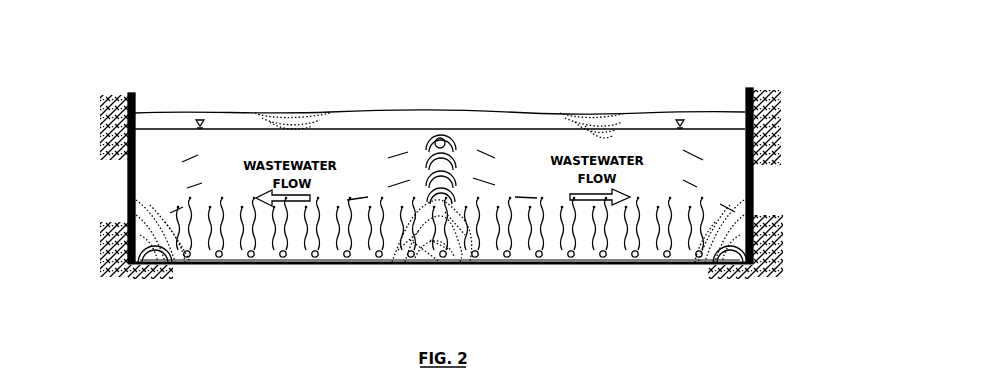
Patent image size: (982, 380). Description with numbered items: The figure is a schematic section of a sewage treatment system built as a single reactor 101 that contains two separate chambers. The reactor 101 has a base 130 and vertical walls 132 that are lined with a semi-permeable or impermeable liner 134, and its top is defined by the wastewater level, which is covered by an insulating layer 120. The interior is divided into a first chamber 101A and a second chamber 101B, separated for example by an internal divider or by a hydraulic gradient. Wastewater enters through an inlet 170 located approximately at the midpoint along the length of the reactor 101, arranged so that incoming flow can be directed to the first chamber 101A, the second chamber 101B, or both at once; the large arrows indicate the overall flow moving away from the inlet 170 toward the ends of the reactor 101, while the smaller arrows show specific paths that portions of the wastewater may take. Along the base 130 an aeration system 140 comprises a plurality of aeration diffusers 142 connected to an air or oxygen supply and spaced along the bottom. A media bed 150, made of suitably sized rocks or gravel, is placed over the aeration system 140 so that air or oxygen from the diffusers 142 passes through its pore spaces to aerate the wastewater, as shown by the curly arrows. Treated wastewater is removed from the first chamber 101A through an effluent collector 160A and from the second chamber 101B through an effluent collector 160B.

The reactor 101 is at (440, 102).
The first chamber 101A is at (285, 102).
The second chamber 101B is at (594, 102).
The insulating layer 120 is at (605, 112).
The base 130 is at (590, 266).
The vertical walls 132 is at (755, 201).
The liner 134 is at (133, 203).
The aeration system 140 is at (388, 276).
The aeration diffusers 142 is at (281, 264).
The media bed 150 is at (462, 250).
The effluent collector 160A is at (738, 267).
The effluent collector 160B is at (150, 267).
The inlet 170 is at (446, 135).